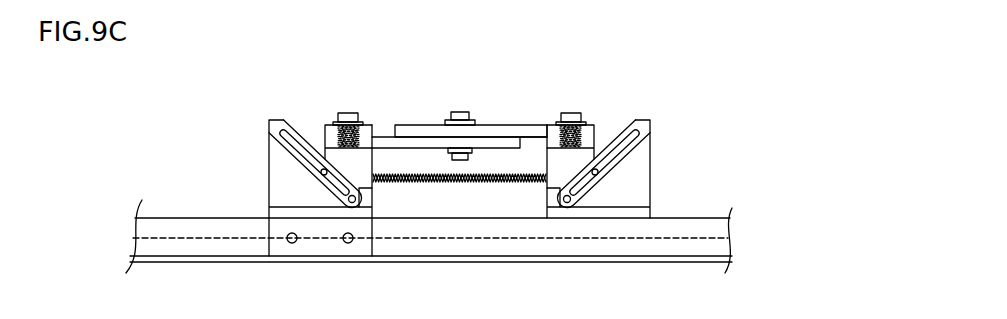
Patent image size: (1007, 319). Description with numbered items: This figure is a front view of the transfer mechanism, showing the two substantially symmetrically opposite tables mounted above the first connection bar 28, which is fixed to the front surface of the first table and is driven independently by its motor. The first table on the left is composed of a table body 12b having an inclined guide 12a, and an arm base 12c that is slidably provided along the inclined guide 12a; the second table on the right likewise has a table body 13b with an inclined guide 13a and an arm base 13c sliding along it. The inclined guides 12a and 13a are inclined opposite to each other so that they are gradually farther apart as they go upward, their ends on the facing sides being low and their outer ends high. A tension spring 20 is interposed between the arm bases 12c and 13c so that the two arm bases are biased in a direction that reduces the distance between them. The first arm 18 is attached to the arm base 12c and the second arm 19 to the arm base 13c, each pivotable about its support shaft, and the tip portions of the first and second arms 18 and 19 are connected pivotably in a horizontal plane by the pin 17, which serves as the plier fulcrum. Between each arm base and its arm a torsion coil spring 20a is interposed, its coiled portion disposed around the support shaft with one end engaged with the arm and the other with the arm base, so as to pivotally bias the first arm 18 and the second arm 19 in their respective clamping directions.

The inclined guide 12a is at (289, 149).
The table body 12b is at (292, 185).
The arm base 12c is at (362, 173).
The inclined guide 13a is at (630, 149).
The table body 13b is at (627, 185).
The arm base 13c is at (556, 168).
The pin 17 is at (461, 112).
The first arm 18 is at (423, 142).
The second arm 19 is at (503, 130).
The tension spring 20 is at (477, 183).
The torsion coil spring 20a is at (335, 136).
The first connection bar 28 is at (188, 249).